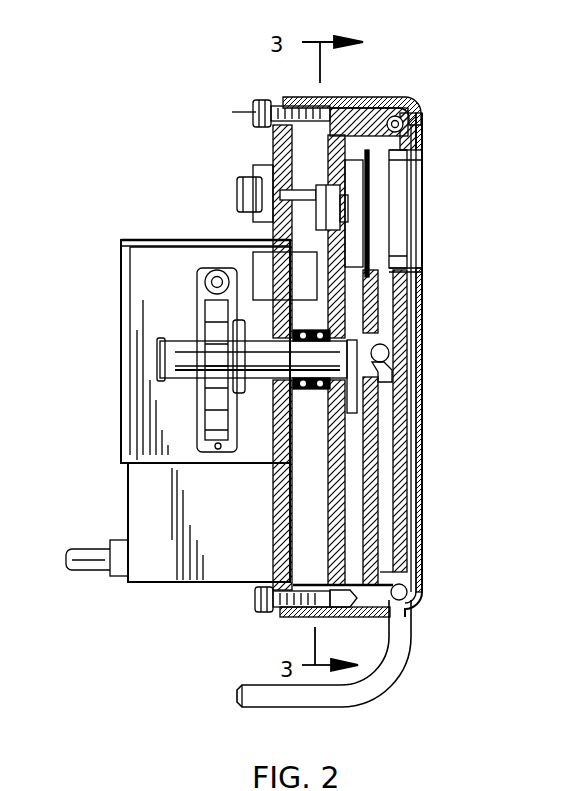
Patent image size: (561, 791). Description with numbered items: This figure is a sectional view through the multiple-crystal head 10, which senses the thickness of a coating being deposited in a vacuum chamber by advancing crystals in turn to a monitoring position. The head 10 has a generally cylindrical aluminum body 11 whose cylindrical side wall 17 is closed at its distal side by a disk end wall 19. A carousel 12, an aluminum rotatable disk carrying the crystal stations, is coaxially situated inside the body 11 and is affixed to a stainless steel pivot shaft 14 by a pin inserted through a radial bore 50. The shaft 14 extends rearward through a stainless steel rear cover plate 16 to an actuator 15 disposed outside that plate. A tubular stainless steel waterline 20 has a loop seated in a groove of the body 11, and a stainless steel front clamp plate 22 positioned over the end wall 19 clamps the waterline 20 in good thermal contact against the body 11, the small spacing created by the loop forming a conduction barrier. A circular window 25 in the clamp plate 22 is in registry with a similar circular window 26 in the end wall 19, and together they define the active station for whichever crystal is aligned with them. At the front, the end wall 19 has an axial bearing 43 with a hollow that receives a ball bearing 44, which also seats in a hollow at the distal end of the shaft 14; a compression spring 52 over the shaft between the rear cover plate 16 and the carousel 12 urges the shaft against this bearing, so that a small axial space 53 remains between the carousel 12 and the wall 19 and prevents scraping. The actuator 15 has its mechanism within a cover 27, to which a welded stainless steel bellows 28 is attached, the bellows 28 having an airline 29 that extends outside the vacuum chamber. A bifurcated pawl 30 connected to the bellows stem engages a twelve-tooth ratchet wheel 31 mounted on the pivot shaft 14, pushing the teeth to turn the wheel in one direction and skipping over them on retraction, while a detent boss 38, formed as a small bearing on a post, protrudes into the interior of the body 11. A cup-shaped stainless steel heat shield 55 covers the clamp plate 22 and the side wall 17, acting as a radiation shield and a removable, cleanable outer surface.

The multiple-crystal head 10 is at (152, 182).
The body 11 is at (307, 617).
The carousel 12 is at (388, 96).
The pivot shaft 14 is at (266, 388).
The actuator 15 is at (95, 419).
The rear cover plate 16 is at (272, 547).
The cylindrical side wall 17 is at (396, 115).
The disk end wall 19 is at (420, 398).
The waterline 20 is at (402, 636).
The front clamp plate 22 is at (423, 281).
The circular window 25 is at (399, 258).
The circular window 26 is at (398, 262).
The cover 27 is at (163, 240).
The bellows 28 is at (178, 583).
The airline 29 is at (104, 573).
The bifurcated pawl 30 is at (205, 403).
The ratchet wheel 31 is at (217, 327).
The detent boss 38 is at (273, 247).
The axial bearing 43 is at (400, 368).
The ball bearing 44 is at (388, 350).
The radial bore 50 is at (350, 497).
The compression spring 52 is at (300, 392).
The axial space 53 is at (400, 438).
The heat shield 55 is at (422, 525).